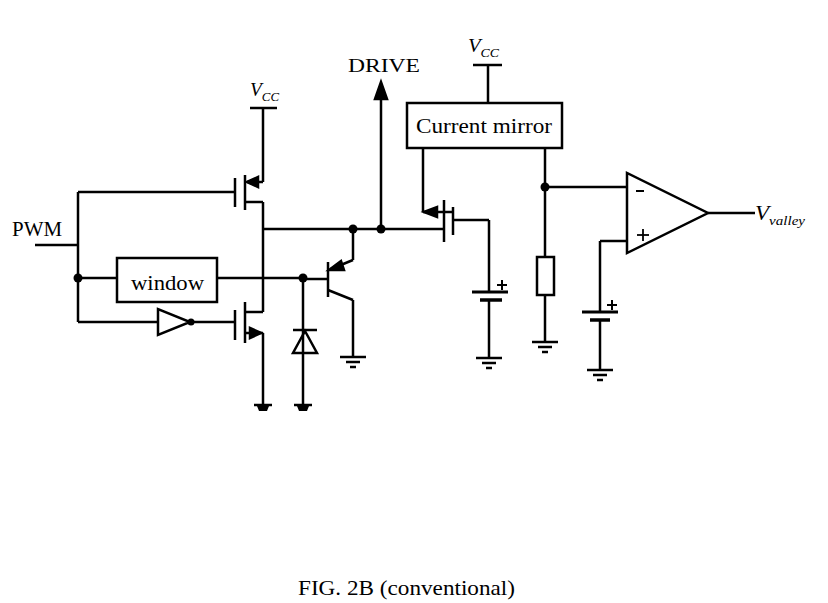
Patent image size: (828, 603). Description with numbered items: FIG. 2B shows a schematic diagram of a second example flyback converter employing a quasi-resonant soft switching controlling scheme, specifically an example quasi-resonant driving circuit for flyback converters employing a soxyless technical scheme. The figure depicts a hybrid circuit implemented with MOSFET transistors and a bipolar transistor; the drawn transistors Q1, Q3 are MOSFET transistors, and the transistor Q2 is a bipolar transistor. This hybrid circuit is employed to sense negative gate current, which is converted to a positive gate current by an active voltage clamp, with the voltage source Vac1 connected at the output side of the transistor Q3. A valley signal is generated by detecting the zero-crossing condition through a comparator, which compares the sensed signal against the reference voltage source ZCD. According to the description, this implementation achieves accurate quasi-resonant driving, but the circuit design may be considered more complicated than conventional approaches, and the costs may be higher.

The NMOS transistor Q1 is at (239, 356).
The PNP bipolar transistor Q2 is at (346, 298).
The PMOS transistor Q3 is at (456, 195).
The reference voltage source Vac1 is at (475, 294).
The zero-crossing detection reference voltage source ZCD is at (625, 310).